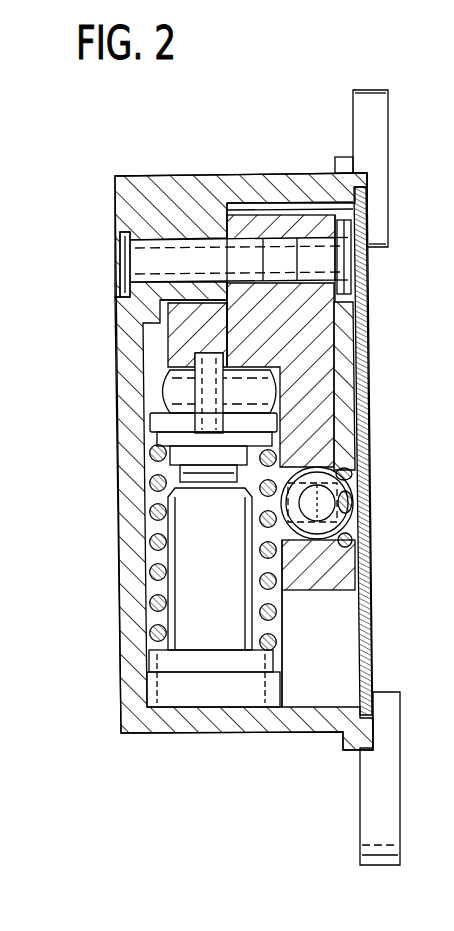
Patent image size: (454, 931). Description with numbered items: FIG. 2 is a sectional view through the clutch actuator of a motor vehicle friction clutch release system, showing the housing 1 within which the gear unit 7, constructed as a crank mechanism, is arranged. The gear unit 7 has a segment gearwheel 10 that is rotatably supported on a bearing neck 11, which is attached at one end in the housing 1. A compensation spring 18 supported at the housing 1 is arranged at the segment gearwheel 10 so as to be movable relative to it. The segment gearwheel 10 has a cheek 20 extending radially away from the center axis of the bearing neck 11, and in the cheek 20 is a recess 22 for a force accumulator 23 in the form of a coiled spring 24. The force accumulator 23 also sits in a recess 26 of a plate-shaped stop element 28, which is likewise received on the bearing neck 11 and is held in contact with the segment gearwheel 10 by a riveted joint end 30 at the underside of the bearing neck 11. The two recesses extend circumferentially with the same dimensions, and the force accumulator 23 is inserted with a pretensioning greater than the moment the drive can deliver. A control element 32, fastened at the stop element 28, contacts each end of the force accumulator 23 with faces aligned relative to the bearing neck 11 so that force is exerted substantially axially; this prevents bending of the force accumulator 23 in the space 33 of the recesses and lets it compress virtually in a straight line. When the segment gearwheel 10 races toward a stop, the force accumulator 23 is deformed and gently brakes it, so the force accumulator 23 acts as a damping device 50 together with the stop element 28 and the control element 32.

The housing 1 is at (167, 176).
The gear unit 7 is at (166, 362).
The segment gearwheel 10 is at (205, 308).
The bearing neck 11 is at (143, 263).
The compensation spring 18 is at (152, 480).
The cheek 20 is at (180, 628).
The recess 22 is at (282, 542).
The force accumulator 23 is at (352, 483).
The coiled spring 24 is at (333, 473).
The recess 26 is at (352, 548).
The stop element 28 is at (347, 388).
The riveted joint end 30 is at (352, 262).
The control element 32 is at (221, 561).
The space 33 is at (326, 547).
The damping device 50 is at (343, 520).